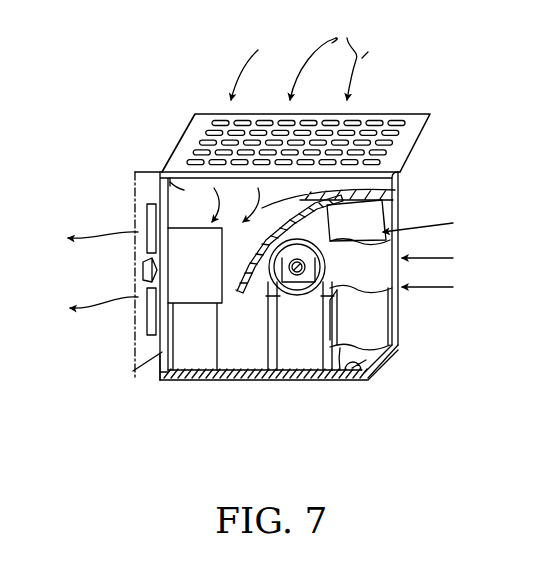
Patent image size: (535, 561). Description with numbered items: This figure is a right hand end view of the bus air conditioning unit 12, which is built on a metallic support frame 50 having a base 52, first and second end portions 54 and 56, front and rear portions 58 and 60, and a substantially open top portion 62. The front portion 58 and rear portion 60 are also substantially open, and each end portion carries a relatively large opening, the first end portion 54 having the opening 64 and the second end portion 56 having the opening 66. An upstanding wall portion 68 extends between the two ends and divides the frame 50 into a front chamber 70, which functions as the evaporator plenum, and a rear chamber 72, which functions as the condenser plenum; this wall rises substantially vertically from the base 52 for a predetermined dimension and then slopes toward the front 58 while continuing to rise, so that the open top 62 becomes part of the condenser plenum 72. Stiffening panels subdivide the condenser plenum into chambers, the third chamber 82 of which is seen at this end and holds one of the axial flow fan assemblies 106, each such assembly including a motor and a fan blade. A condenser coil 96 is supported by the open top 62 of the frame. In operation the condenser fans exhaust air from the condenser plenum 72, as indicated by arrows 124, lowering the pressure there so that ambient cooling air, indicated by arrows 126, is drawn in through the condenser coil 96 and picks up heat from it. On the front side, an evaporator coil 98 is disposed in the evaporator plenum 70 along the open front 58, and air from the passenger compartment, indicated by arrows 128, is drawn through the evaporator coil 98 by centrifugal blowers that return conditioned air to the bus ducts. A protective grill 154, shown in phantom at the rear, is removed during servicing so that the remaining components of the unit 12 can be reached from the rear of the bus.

The bus air conditioning unit 12 is at (163, 106).
The metallic support frame 50 is at (198, 427).
The base 52 is at (364, 377).
The first end portion 54 is at (190, 177).
The second end portion 56 is at (345, 290).
The front portion 58 is at (402, 340).
The rear portion 60 is at (157, 366).
The substantially open top portion 62 is at (402, 170).
The opening 64 is at (315, 232).
The opening 66 is at (328, 267).
The upstanding wall portion 68 is at (243, 376).
The front chamber 70 is at (364, 363).
The rear chamber 72 is at (186, 192).
The third chamber 82 is at (393, 194).
The condenser coil 96 is at (432, 117).
The evaporator coil 98 is at (345, 375).
The axial flow fan assembly 106 is at (143, 270).
The arrows indicating exhaust air 124 is at (70, 308).
The arrows indicating ambient cooling air 126 is at (290, 117).
The arrows indicating passenger compartment air 128 is at (453, 287).
The protective grill 154 is at (135, 192).